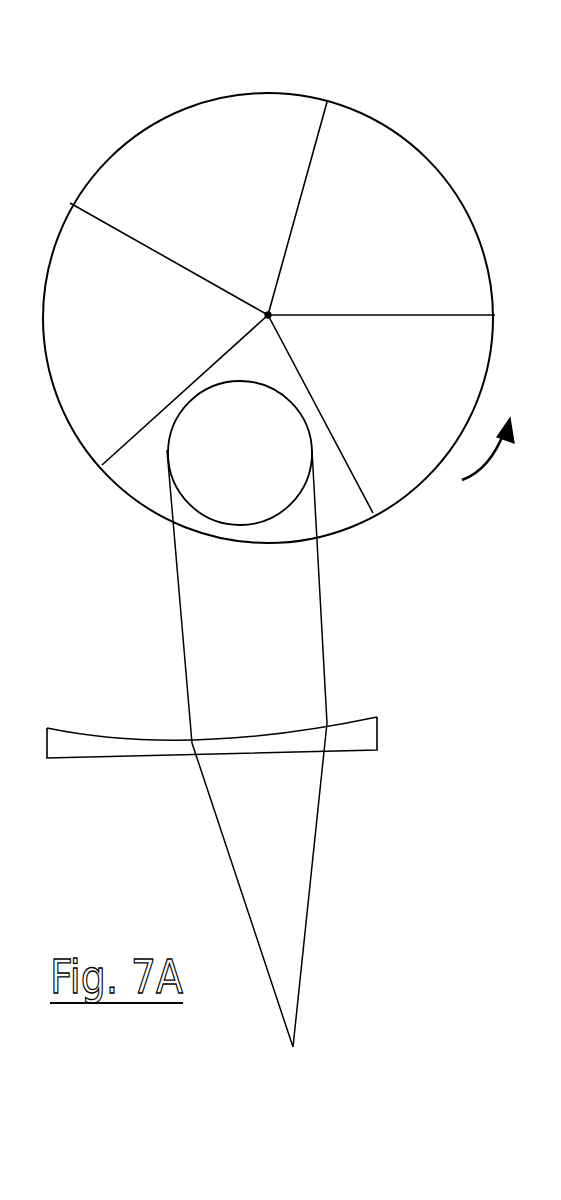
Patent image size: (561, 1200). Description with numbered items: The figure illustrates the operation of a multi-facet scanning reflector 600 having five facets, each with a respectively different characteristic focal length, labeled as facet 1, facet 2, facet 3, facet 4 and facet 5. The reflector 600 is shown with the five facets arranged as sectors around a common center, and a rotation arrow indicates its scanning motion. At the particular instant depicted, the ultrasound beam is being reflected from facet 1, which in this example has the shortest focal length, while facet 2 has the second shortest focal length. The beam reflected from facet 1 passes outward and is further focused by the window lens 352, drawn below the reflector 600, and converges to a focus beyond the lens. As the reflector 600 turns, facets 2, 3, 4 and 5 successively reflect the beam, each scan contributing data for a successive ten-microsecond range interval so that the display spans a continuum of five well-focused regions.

The scanning reflector 600 is at (267, 105).
The window lens 352 is at (82, 750).
The facet 1 is at (240, 453).
The facet 2 is at (377, 372).
The facet 3 is at (363, 231).
The facet 4 is at (218, 200).
The facet 5 is at (135, 321).